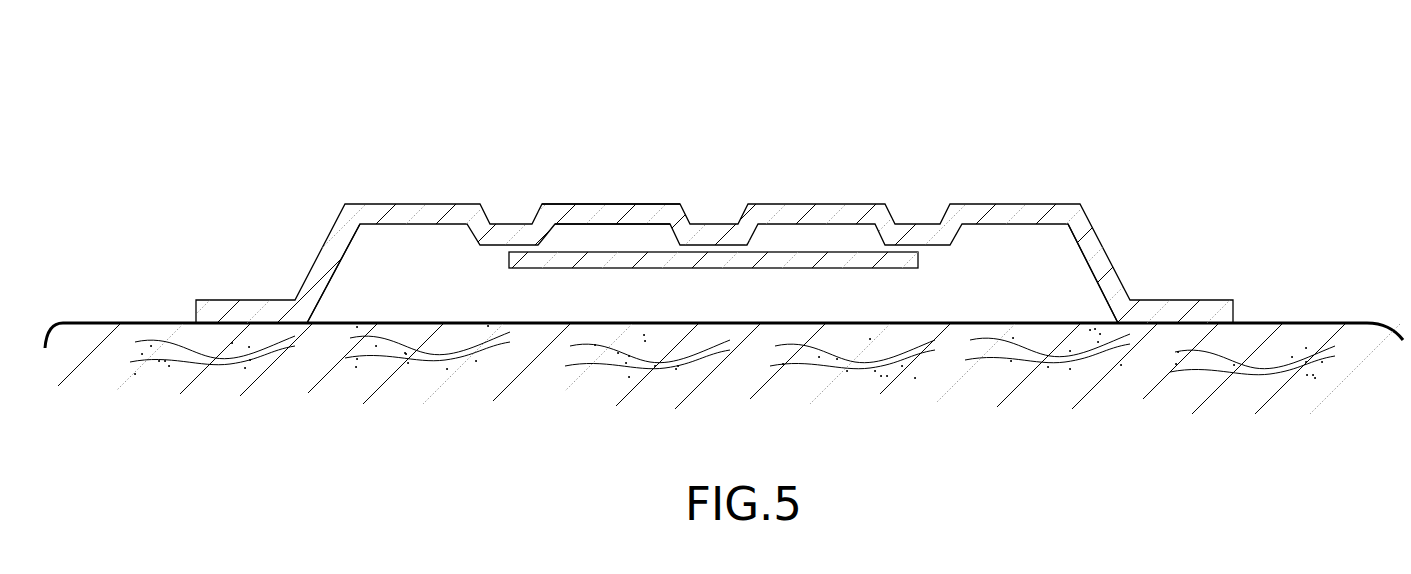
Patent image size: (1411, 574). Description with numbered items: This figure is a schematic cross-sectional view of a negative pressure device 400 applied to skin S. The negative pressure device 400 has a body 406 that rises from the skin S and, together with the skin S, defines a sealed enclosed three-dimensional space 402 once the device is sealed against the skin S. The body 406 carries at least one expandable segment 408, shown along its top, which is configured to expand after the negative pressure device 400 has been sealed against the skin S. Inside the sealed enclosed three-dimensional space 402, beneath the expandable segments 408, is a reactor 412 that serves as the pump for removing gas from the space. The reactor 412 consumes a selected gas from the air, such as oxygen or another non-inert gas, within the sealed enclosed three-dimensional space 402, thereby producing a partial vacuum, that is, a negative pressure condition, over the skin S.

The negative pressure device 400 is at (760, 188).
The sealed enclosed three-dimensional space 402 is at (412, 268).
The body 406 is at (329, 248).
The expandable segment 408 is at (604, 213).
The reactor 412 is at (850, 260).
The skin S is at (42, 347).